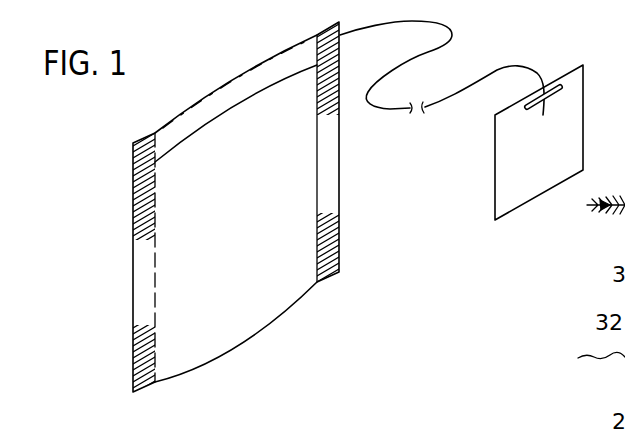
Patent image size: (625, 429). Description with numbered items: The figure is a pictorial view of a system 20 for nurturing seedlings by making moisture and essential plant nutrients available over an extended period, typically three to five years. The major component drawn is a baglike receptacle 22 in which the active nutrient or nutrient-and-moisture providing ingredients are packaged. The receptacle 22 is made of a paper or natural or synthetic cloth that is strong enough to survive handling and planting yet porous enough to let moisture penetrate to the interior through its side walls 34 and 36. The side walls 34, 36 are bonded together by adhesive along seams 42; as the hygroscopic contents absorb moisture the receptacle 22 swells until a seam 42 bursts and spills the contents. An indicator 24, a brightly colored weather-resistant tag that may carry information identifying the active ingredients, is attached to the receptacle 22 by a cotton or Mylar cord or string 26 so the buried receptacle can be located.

The system 20 is at (247, 209).
The baglike receptacle 22 is at (229, 209).
The indicator 24 is at (485, 153).
The cord or string 26 is at (455, 51).
The side wall 34 is at (243, 102).
The side wall 36 is at (232, 245).
The seams 42 is at (138, 310).